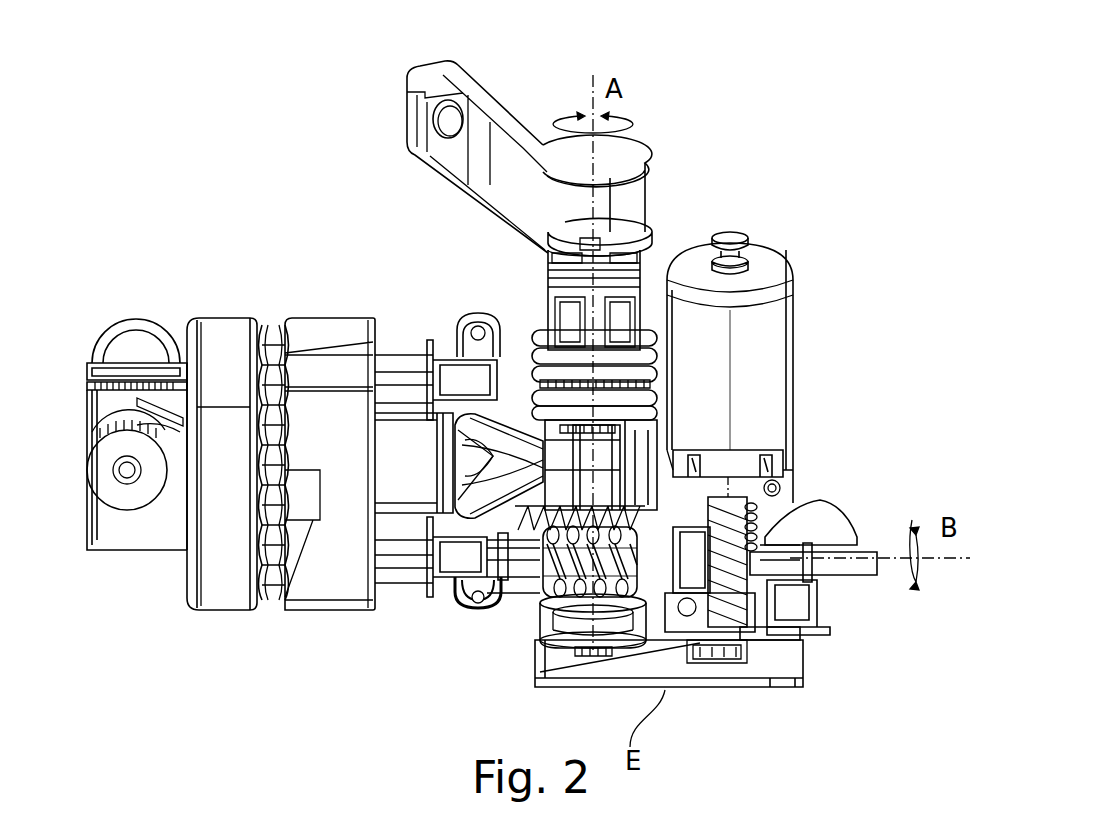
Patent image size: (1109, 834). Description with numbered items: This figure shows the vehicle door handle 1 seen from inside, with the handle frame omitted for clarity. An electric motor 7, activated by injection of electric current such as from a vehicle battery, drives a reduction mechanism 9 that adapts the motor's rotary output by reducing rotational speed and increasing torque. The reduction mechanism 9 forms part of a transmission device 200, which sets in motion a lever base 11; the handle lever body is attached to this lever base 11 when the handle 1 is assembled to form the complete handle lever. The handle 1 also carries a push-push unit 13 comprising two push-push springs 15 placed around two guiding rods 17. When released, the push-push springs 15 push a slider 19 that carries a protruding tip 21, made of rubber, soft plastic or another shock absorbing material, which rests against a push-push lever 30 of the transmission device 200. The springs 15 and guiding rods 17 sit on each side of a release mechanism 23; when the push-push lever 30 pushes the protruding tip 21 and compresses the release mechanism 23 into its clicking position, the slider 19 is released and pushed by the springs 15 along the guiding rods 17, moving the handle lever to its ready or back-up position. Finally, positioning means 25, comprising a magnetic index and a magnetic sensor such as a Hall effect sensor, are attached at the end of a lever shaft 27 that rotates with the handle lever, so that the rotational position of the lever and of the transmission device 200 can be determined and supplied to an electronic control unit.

The door handle 1 is at (277, 202).
The electric motor 7 is at (792, 387).
The reduction mechanism 9 is at (765, 523).
The lever base 11 is at (403, 112).
The push-push unit 13 is at (458, 303).
The push-push springs 15 is at (273, 597).
The guiding rods 17 is at (413, 573).
The slider 19 is at (342, 613).
The protruding tip 21 is at (520, 420).
The release mechanism 23 is at (262, 487).
The positioning means 25 is at (540, 622).
The lever shaft 27 is at (640, 283).
The push-push lever 30 is at (650, 453).
The transmission device 200 is at (658, 210).